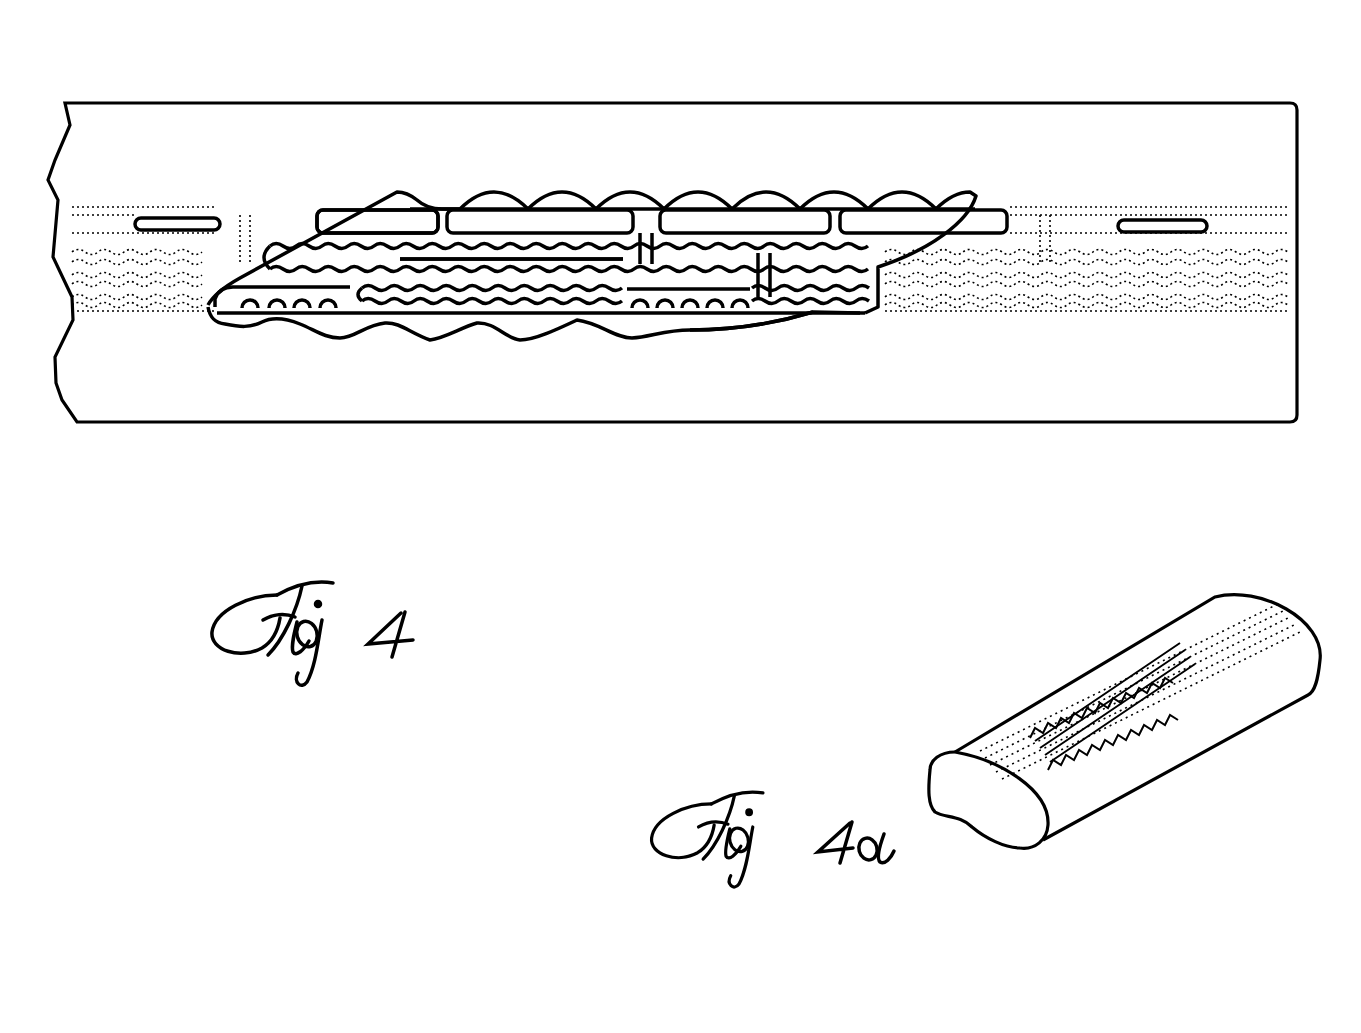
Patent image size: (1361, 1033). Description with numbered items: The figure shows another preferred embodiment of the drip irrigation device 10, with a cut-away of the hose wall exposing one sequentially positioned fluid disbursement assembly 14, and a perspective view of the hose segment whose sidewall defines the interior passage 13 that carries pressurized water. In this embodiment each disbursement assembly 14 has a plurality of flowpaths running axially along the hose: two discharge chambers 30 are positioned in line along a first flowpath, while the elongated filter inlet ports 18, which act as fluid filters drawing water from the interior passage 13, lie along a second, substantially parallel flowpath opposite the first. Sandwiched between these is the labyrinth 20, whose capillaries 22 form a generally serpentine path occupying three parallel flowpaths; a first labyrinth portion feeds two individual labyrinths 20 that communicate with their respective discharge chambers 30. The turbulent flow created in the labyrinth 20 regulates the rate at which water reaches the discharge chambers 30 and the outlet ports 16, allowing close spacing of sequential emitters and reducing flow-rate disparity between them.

In FIG. 4A, the drip irrigation device 10 is at (1033, 703).
In FIG. 4A, the interior passage 13 is at (997, 805).
In FIG. 4, the fluid disbursement assembly 14 is at (277, 430).
In FIG. 4, the outlet port 16 is at (1160, 222).
In FIG. 4, the filter inlet port 18 is at (612, 462).
In FIG. 4, the labyrinth 20 is at (790, 300).
In FIG. 4, the capillaries 22 is at (490, 285).
In FIG. 4, the discharge chamber 30 is at (907, 225).